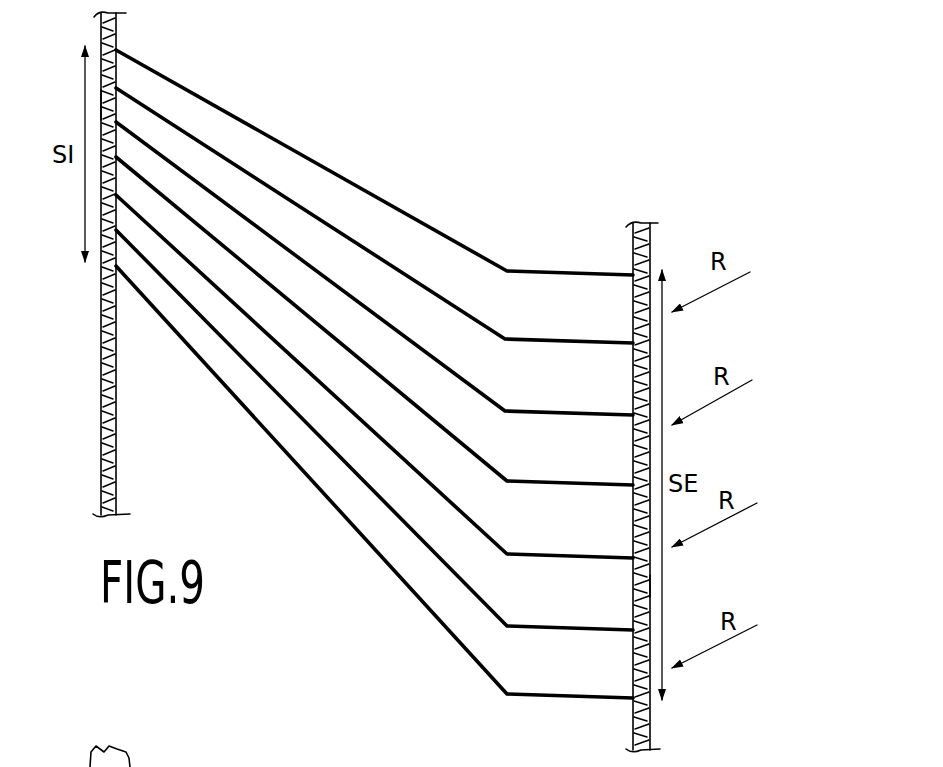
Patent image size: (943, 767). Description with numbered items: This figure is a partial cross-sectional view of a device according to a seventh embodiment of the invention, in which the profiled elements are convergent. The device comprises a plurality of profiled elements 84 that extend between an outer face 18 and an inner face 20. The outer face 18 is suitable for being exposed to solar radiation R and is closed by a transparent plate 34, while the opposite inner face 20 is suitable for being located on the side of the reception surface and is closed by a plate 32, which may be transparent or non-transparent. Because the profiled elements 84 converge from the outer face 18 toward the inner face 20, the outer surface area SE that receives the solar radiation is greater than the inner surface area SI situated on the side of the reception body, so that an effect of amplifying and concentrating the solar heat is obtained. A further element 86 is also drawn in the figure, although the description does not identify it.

The outer face 18 is at (650, 585).
The inner face 20 is at (111, 105).
The plate 32 is at (106, 498).
The transparent plate 34 is at (634, 738).
The profiled elements 84 is at (296, 289).
The sensor element 86 is at (113, 745).